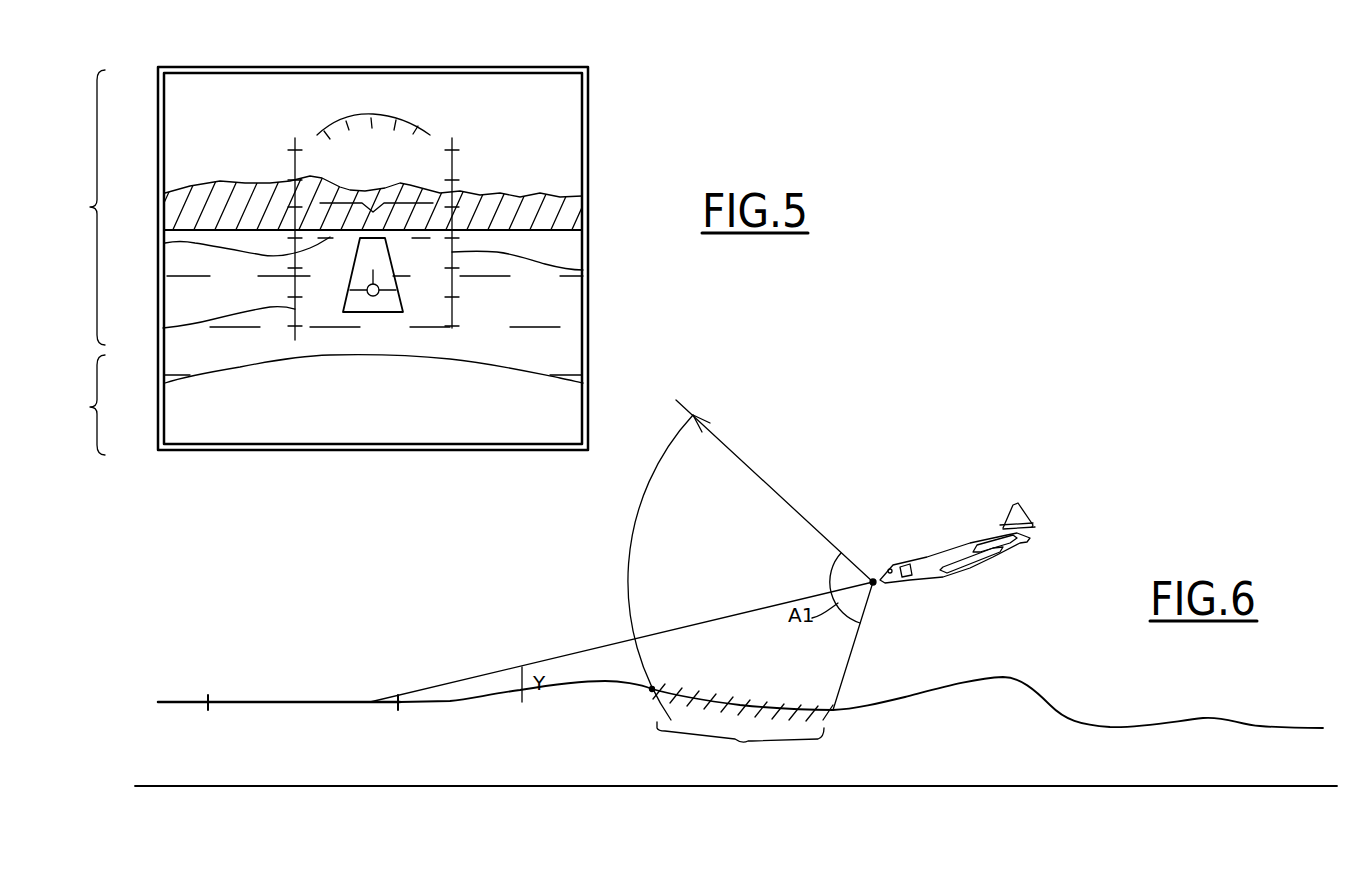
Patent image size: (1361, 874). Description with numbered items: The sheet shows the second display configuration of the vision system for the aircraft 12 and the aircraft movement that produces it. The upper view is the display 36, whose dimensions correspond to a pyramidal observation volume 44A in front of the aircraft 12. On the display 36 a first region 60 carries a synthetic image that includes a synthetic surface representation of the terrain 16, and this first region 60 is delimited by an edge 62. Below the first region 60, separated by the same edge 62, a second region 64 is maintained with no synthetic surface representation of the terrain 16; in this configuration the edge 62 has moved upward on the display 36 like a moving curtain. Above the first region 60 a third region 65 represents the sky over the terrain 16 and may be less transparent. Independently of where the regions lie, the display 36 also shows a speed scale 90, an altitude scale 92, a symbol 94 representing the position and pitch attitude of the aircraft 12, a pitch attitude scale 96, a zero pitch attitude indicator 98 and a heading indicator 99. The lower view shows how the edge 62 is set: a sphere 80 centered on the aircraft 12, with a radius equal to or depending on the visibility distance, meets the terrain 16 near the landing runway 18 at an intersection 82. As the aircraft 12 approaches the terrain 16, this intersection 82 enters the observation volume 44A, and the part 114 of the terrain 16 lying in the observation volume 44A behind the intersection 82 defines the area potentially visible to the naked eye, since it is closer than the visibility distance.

In FIG. 6, the aircraft 12 is at (977, 519).
In FIG. 6, the terrain 16 is at (515, 703).
In FIG. 6, the landing runway 18 is at (273, 701).
In FIG. 5, the display 36 is at (597, 140).
In FIG. 6, the observation volume 44A is at (833, 650).
In FIG. 5, the first region 60 is at (82, 207).
In FIG. 5, the edge 62 is at (548, 375).
In FIG. 5, the second region 64 is at (82, 405).
In FIG. 5, the third region 65 is at (212, 112).
In FIG. 6, the sphere 80 is at (628, 548).
In FIG. 6, the intersection 82 is at (652, 689).
In FIG. 5, the speed scale 90 is at (163, 328).
In FIG. 5, the altitude scale 92 is at (588, 270).
In FIG. 5, the symbol 94 is at (393, 296).
In FIG. 5, the pitch attitude scale 96 is at (165, 243).
In FIG. 5, the zero pitch attitude indicator 98 is at (338, 192).
In FIG. 5, the heading indicator 99 is at (428, 134).
In FIG. 6, the part of the terrain 114 is at (740, 745).